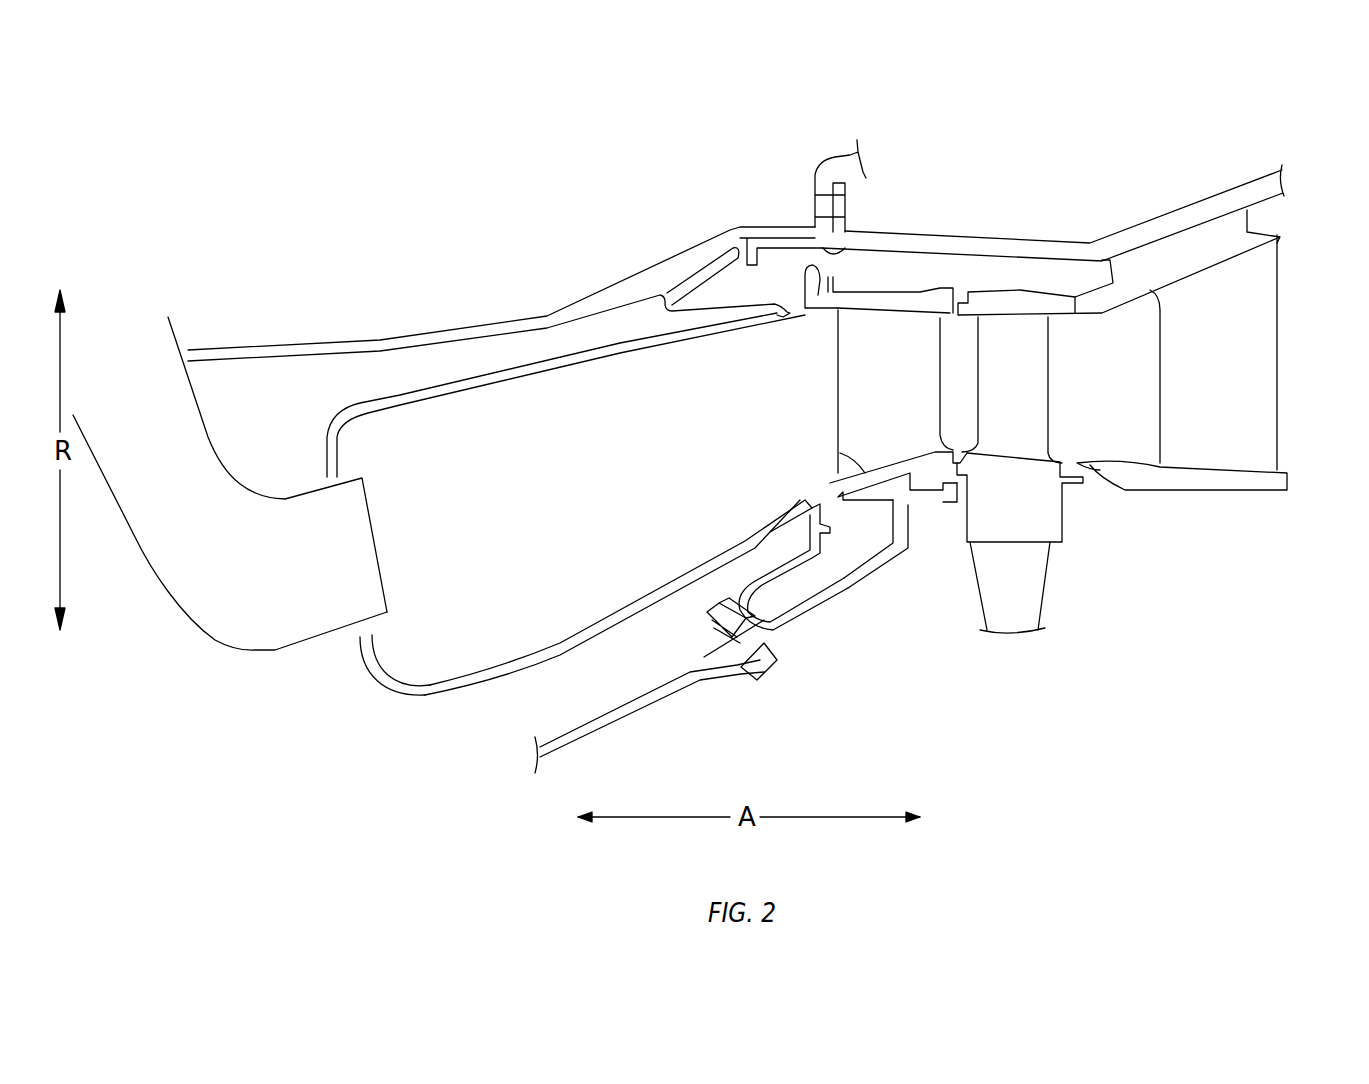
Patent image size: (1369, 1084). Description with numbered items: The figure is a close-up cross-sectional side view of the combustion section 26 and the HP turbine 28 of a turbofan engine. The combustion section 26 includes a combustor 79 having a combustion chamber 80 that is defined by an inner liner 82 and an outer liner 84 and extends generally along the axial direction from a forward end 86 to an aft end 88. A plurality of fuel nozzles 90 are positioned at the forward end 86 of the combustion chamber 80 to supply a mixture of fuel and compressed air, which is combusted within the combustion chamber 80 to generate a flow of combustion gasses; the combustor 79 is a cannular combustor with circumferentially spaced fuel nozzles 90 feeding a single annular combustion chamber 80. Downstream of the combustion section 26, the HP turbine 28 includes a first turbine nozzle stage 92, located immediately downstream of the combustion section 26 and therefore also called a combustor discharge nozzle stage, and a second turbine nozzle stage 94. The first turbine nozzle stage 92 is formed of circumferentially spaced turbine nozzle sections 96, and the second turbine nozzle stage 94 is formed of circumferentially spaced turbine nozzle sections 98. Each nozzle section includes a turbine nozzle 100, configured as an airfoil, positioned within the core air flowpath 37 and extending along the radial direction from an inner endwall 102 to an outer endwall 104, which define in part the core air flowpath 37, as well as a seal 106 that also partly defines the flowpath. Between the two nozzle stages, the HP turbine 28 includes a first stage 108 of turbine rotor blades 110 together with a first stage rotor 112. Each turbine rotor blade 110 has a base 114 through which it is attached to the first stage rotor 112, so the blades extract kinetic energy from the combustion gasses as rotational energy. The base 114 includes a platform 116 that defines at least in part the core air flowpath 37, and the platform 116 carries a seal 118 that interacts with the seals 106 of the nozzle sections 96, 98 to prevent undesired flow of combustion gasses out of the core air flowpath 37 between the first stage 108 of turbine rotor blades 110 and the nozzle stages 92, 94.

The combustion section 26 is at (517, 267).
The HP turbine 28 is at (1032, 223).
The core air flowpath 37 is at (1108, 394).
The combustor 79 is at (403, 370).
The combustion chamber 80 is at (528, 531).
The inner liner 82 is at (530, 660).
The outer liner 84 is at (452, 397).
The forward end 86 is at (335, 685).
The aft end 88 is at (760, 375).
The fuel nozzles 90 is at (255, 505).
The first turbine nozzle stage 92 is at (887, 273).
The second turbine nozzle stage 94 is at (1235, 192).
The turbine nozzle sections 96 is at (827, 372).
The turbine nozzle sections 98 is at (1340, 323).
The turbine nozzle 100 is at (362, 223).
The inner endwall 102 is at (865, 473).
The outer endwall 104 is at (863, 303).
The seal 106 is at (958, 443).
The first stage of turbine rotor blades 108 is at (1015, 355).
The turbine rotor blades 110 is at (1015, 355).
The first stage rotor 112 is at (1025, 594).
The base 114 is at (1090, 508).
The platform 116 is at (1040, 425).
The seal 118 is at (957, 490).